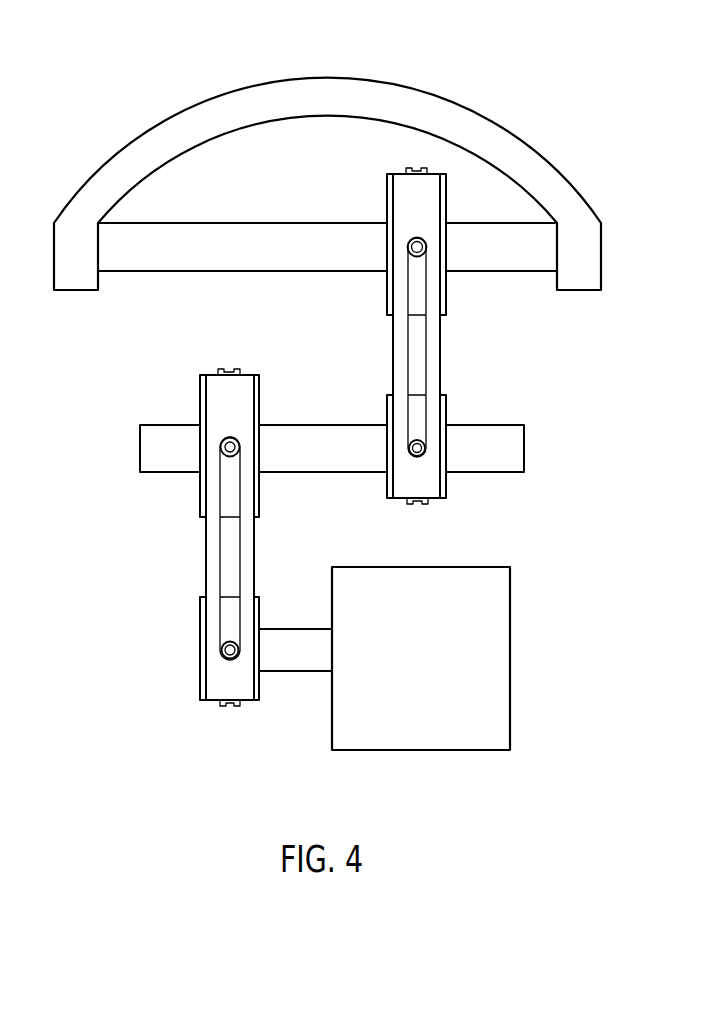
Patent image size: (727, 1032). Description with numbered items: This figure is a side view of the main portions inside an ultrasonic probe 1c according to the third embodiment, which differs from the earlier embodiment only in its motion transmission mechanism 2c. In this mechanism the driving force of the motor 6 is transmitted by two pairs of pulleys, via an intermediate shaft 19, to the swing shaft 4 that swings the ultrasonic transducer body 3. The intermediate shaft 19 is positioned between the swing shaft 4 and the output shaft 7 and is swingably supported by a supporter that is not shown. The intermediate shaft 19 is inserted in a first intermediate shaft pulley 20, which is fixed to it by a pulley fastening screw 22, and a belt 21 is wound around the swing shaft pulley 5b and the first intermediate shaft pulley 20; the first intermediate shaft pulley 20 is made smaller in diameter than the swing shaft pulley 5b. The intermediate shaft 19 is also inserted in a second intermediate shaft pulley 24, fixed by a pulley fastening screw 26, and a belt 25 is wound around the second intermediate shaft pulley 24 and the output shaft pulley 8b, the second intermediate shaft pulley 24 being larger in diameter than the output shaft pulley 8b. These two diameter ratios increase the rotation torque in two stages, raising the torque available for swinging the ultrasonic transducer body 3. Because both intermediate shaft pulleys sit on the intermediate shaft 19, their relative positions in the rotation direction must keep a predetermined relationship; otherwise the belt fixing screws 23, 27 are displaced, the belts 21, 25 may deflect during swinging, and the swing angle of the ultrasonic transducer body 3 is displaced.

The ultrasonic probe 1c is at (490, 62).
The motion transmission mechanism 2c is at (110, 398).
The ultrasonic transducer body 3 is at (497, 141).
The swing shaft 4 is at (504, 240).
The swing shaft pulley 5b is at (386, 193).
The motor 6 is at (500, 660).
The output shaft 7 is at (293, 658).
The output shaft pulley 8b is at (200, 657).
The intermediate shaft 19 is at (527, 450).
The first intermediate shaft pulley 20 is at (447, 405).
The belt 21 is at (435, 352).
The pulley fastening screw 22 is at (409, 448).
The belt fixing screw 23 is at (418, 506).
The second intermediate shaft pulley 24 is at (200, 398).
The belt 25 is at (210, 552).
The pulley fastening screw 26 is at (241, 447).
The belt fixing screw 27 is at (230, 369).